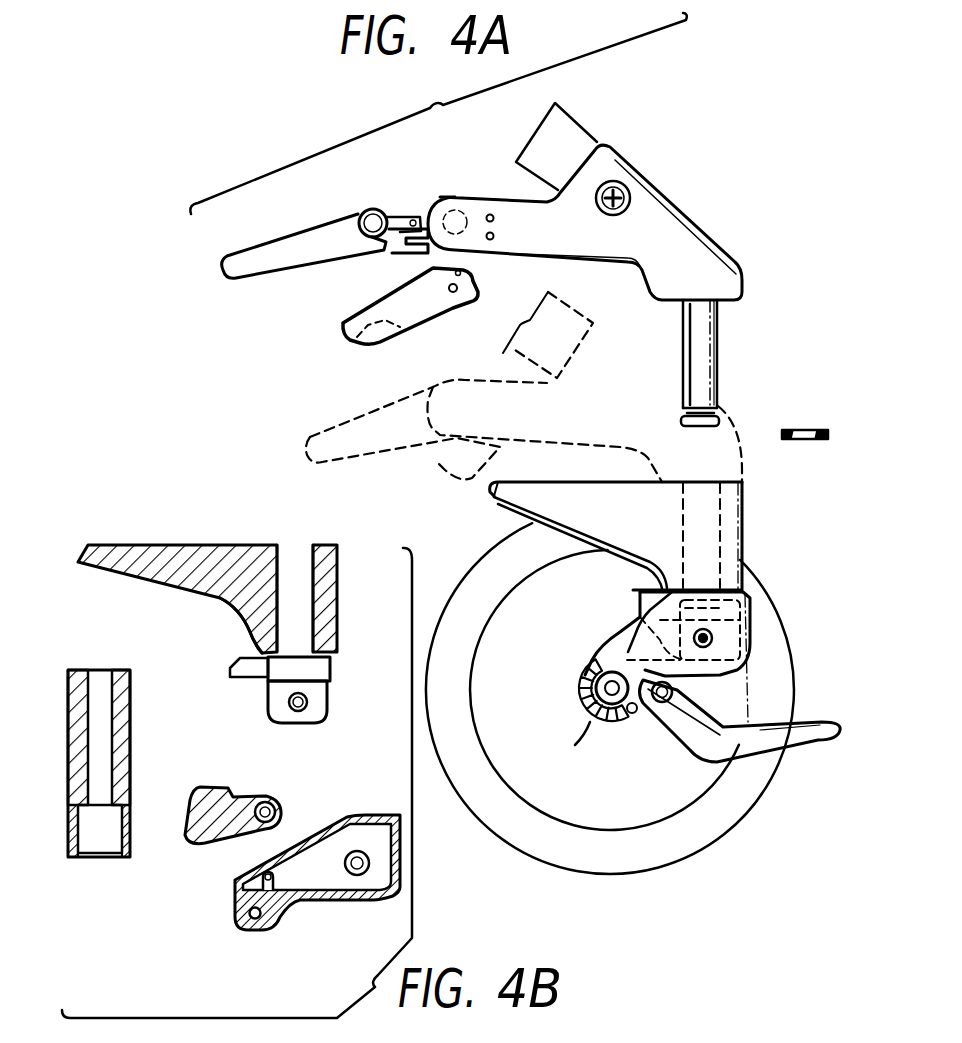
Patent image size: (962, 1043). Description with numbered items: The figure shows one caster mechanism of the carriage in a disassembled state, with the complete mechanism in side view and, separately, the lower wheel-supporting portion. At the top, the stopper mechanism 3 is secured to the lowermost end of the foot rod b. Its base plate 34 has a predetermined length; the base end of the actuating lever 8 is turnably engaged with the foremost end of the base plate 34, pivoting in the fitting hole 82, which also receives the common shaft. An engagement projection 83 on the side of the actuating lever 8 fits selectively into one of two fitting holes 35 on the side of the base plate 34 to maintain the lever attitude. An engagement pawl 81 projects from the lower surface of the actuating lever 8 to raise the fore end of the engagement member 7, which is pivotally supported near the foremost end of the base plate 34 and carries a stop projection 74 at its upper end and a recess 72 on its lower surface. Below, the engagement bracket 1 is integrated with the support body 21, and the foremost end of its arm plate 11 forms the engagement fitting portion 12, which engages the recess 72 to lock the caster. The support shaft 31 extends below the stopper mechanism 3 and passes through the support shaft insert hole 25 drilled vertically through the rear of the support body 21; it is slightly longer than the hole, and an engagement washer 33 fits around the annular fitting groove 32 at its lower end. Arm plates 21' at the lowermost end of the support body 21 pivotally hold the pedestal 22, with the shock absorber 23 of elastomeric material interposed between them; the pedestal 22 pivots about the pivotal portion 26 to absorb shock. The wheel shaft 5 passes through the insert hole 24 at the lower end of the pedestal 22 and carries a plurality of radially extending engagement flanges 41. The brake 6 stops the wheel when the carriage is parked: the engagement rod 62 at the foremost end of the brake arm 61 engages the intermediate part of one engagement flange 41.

In FIG. 4A, the engagement bracket 1 is at (633, 521).
In FIG. 4B, the engagement bracket 1 is at (188, 545).
In FIG. 4A, the stopper mechanism 3 is at (665, 195).
In FIG. 4A, the wheel shaft 5 is at (594, 690).
In FIG. 4A, the brake 6 is at (731, 764).
In FIG. 4A, the engagement member 7 is at (411, 309).
In FIG. 4A, the actuating lever 8 is at (267, 243).
In FIG. 4A, the arm plate 11 is at (597, 523).
In FIG. 4A, the engagement fitting portion 12 is at (487, 495).
In FIG. 4A, the support body 21 is at (732, 609).
In FIG. 4B, the support body 21 is at (141, 727).
In FIG. 4A, the arm plates 21' is at (731, 634).
In FIG. 4B, the arm plates 21' is at (203, 764).
In FIG. 4B, the pedestal 22 is at (373, 901).
In FIG. 4A, the shock absorber 23 is at (642, 619).
In FIG. 4B, the shock absorber 23 is at (215, 842).
In FIG. 4B, the insert hole 24 is at (263, 931).
In FIG. 4A, the support shaft insert hole 25 is at (712, 518).
In FIG. 4B, the support shaft insert hole 25 is at (296, 557).
In FIG. 4A, the pivotal portion 26 is at (709, 636).
In FIG. 4A, the support shaft 31 is at (712, 350).
In FIG. 4A, the annular fitting groove 32 is at (720, 412).
In FIG. 4A, the engagement washer 33 is at (805, 428).
In FIG. 4A, the base plate 34 is at (563, 244).
In FIG. 4A, the fitting holes 35 is at (494, 233).
In FIG. 4A, the engagement flanges 41 is at (578, 745).
In FIG. 4A, the brake arm 61 is at (792, 748).
In FIG. 4A, the engagement rod 62 is at (635, 716).
In FIG. 4A, the recess 72 is at (373, 340).
In FIG. 4A, the stop projection 74 is at (480, 298).
In FIG. 4A, the engagement pawl 81 is at (412, 254).
In FIG. 4A, the fitting hole 82 is at (364, 213).
In FIG. 4A, the engagement projection 83 is at (412, 217).
In FIG. 4A, the foot rod b is at (573, 133).